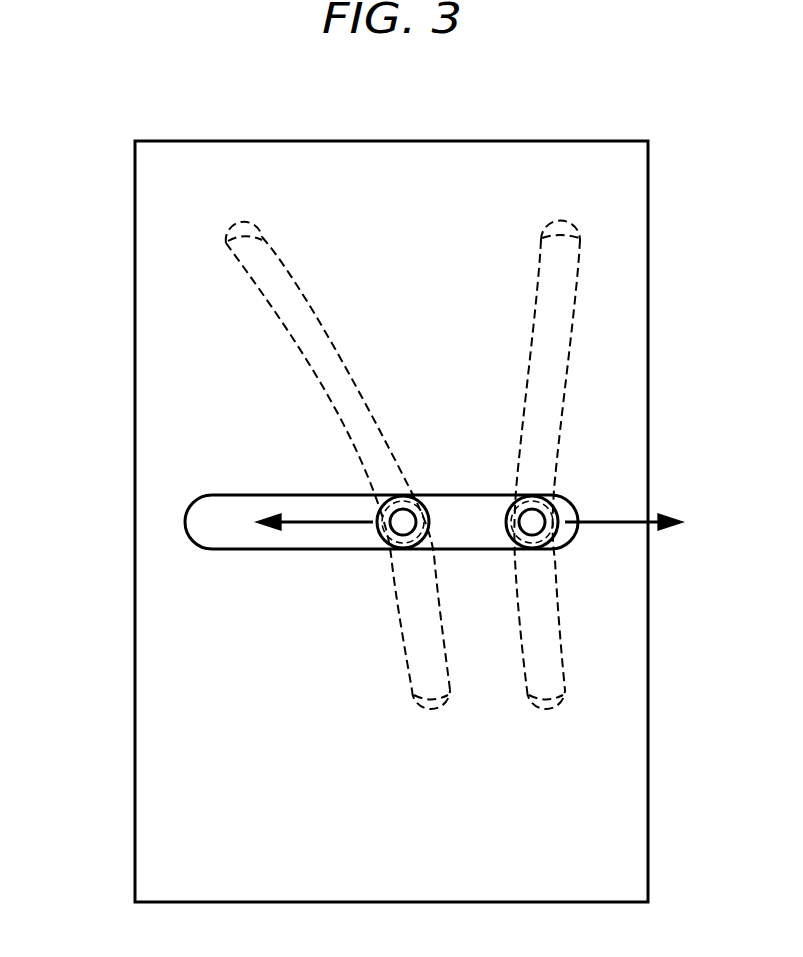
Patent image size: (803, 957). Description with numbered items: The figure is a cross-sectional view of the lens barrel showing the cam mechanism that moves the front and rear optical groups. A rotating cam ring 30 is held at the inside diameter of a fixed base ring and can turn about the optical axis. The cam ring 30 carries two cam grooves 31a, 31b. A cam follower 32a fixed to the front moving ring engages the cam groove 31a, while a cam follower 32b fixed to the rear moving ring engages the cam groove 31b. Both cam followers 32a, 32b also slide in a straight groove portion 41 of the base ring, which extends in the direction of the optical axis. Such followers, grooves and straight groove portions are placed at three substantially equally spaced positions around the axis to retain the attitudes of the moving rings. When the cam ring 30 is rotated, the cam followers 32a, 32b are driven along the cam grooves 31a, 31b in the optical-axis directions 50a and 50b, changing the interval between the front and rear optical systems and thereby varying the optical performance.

The cam ring 30 is at (443, 160).
The cam groove 31a is at (228, 243).
The cam groove 31b is at (579, 272).
The cam follower 32a is at (382, 538).
The cam follower 32b is at (556, 546).
The straight groove portion 41 is at (200, 521).
The direction of the optical axis 50a is at (310, 518).
The direction of the optical axis 50b is at (604, 520).